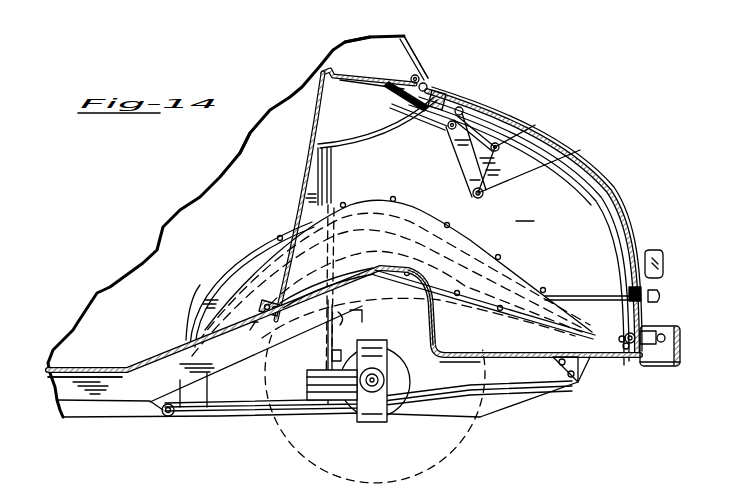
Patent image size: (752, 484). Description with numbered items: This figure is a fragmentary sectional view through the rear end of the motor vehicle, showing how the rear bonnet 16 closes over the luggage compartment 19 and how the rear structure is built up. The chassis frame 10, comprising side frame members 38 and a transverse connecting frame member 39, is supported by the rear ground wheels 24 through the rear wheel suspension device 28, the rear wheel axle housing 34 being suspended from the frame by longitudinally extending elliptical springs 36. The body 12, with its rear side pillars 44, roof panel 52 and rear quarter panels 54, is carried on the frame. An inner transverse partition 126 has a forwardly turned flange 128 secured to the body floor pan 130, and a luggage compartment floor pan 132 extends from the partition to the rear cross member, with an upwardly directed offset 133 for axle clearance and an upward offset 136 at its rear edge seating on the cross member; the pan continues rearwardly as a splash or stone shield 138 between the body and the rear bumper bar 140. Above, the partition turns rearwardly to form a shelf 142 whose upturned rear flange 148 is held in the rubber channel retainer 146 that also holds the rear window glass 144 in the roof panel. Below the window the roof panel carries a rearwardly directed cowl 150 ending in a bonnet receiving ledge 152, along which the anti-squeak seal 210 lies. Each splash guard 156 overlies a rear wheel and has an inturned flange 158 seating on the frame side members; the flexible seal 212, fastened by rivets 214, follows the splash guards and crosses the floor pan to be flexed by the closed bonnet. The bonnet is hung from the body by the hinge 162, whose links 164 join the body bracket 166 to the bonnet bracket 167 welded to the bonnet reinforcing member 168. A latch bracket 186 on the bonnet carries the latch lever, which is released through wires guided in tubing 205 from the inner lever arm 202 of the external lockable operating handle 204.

The chassis frame 10 is at (50, 396).
The body 12 is at (97, 293).
The rear bonnet 16 is at (588, 152).
The luggage compartment 19 is at (525, 213).
The rear ground wheels 24 is at (472, 444).
The rear wheel suspension device 28 is at (312, 420).
The rear wheel axle housing 34 is at (373, 395).
The elliptical springs 36 is at (257, 414).
The side frame members 38 is at (127, 368).
The transverse connecting frame member 39 is at (645, 362).
The rear side pillars 44 is at (245, 262).
The roof panel 52 is at (406, 36).
The rear quarter panels 54 is at (248, 143).
The inner transverse partition 126 is at (310, 100).
The forwardly turned flange 128 is at (265, 305).
The body floor pan 130 is at (182, 332).
The luggage compartment floor pan 132 is at (467, 360).
The upwardly directed offset 133 is at (404, 300).
The upward offset of floor pan rear edge 136 is at (626, 350).
The rear splash or stone shield 138 is at (658, 331).
The rear bumper bar 140 is at (682, 345).
The shelf 142 is at (350, 63).
The rear window glass 144 is at (416, 54).
The channel retainer 146 is at (440, 82).
The upturned rear flange 148 is at (402, 42).
The rearwardly directed cowl 150 is at (412, 98).
The bonnet receiving ledge 152 is at (423, 120).
The splash guard 156 is at (403, 227).
The inturned longitudinal flange 158 is at (423, 270).
The hinge 162 is at (443, 140).
The hinge links 164 is at (504, 113).
The body hinge bracket 166 is at (420, 106).
The bonnet hinge bracket 167 is at (530, 152).
The bonnet reinforcing member 168 is at (604, 184).
The latch bracket 186 is at (343, 323).
The inner lever arm 202 is at (632, 290).
The external lockable operating handle 204 is at (660, 294).
The tubing 205 is at (566, 296).
The anti-squeak seal 210 is at (450, 99).
The flexible seal 212 is at (603, 358).
The rivets 214 is at (343, 203).